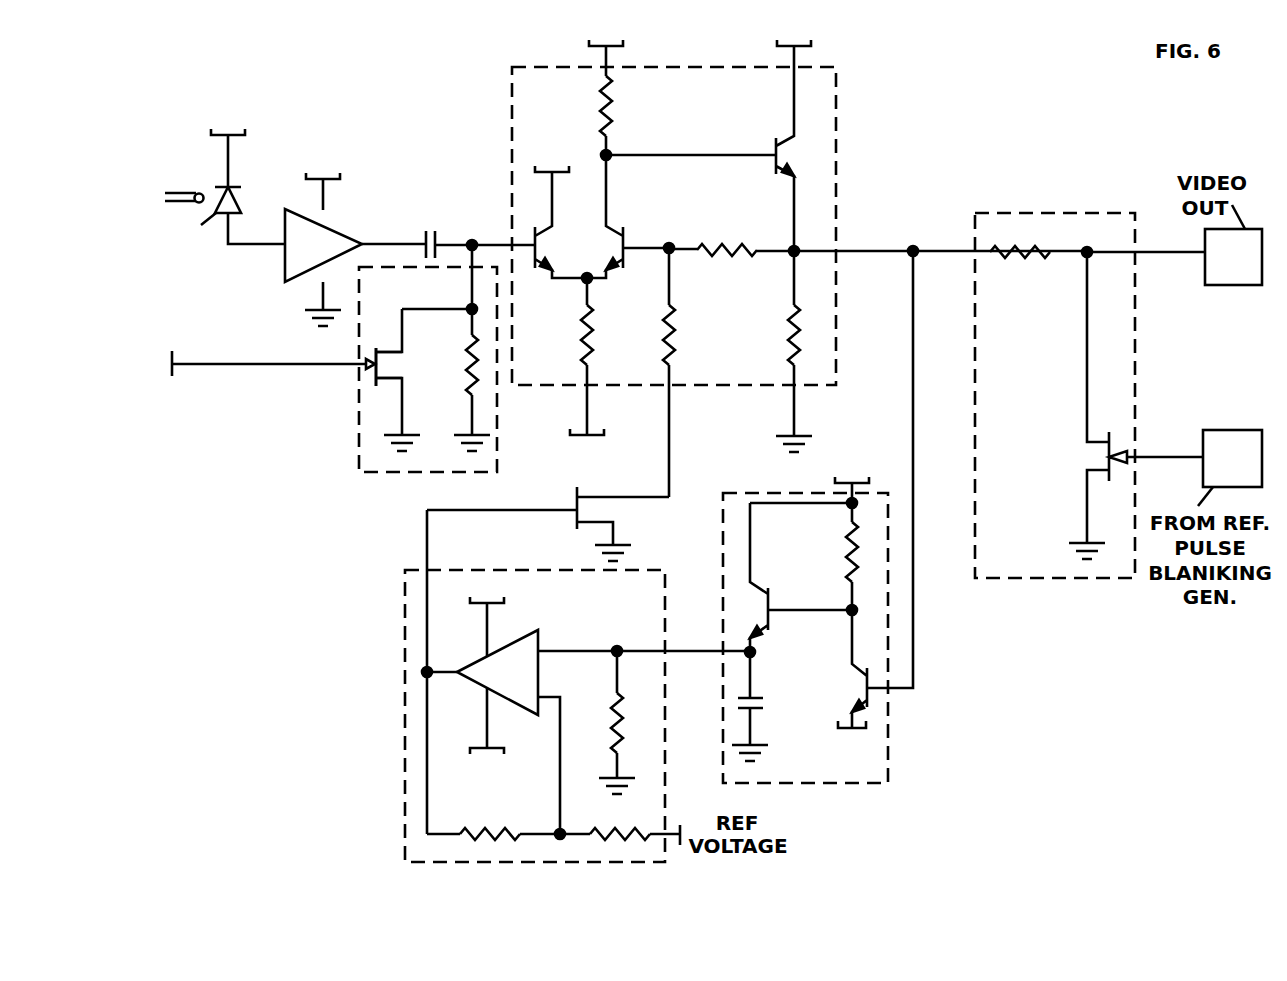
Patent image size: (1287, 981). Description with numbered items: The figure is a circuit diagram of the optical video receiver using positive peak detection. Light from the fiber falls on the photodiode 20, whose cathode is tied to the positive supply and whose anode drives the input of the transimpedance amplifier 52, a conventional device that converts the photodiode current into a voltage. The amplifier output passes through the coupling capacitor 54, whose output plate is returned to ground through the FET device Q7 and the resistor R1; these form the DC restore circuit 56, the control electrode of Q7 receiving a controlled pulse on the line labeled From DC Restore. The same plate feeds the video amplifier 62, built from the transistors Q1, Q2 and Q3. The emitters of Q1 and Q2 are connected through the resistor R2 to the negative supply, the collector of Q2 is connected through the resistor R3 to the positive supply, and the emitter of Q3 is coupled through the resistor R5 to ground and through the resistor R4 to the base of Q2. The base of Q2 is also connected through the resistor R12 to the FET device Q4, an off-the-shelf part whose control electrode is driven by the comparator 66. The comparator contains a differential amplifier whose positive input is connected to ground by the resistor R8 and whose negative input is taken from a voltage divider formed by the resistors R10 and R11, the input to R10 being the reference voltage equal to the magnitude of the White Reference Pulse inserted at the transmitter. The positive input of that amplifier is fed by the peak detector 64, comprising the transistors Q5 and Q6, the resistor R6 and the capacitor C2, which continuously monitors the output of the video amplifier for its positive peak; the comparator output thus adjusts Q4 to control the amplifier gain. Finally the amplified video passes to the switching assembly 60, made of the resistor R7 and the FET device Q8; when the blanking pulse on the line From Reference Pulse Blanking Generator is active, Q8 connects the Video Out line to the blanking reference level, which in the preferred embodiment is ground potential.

The photodiode 20 is at (208, 201).
The transimpedance amplifier 52 is at (340, 231).
The coupling capacitor 54 is at (436, 230).
The DC restore circuit 56 is at (319, 357).
The switching assembly 60 is at (1085, 213).
The video amplifier 62 is at (836, 110).
The peak detector 64 is at (888, 740).
The comparator 66 is at (405, 623).
The transistor Q1 is at (561, 212).
The transistor Q2 is at (618, 216).
The transistor Q3 is at (802, 133).
The FET device Q4 is at (548, 524).
The transistor Q5 is at (748, 577).
The transistor Q6 is at (847, 669).
The FET device Q7 is at (405, 367).
The FET device Q8 is at (1128, 405).
The resistor R1 is at (459, 376).
The resistor R2 is at (603, 372).
The resistor R3 is at (619, 85).
The resistor R4 is at (731, 237).
The resistor R5 is at (778, 351).
The resistor R6 is at (840, 531).
The resistor R7 is at (1031, 239).
The resistor R8 is at (628, 722).
The resistor R10 is at (620, 824).
The resistor R11 is at (493, 819).
The resistor R12 is at (695, 372).
The capacitor C2 is at (762, 706).